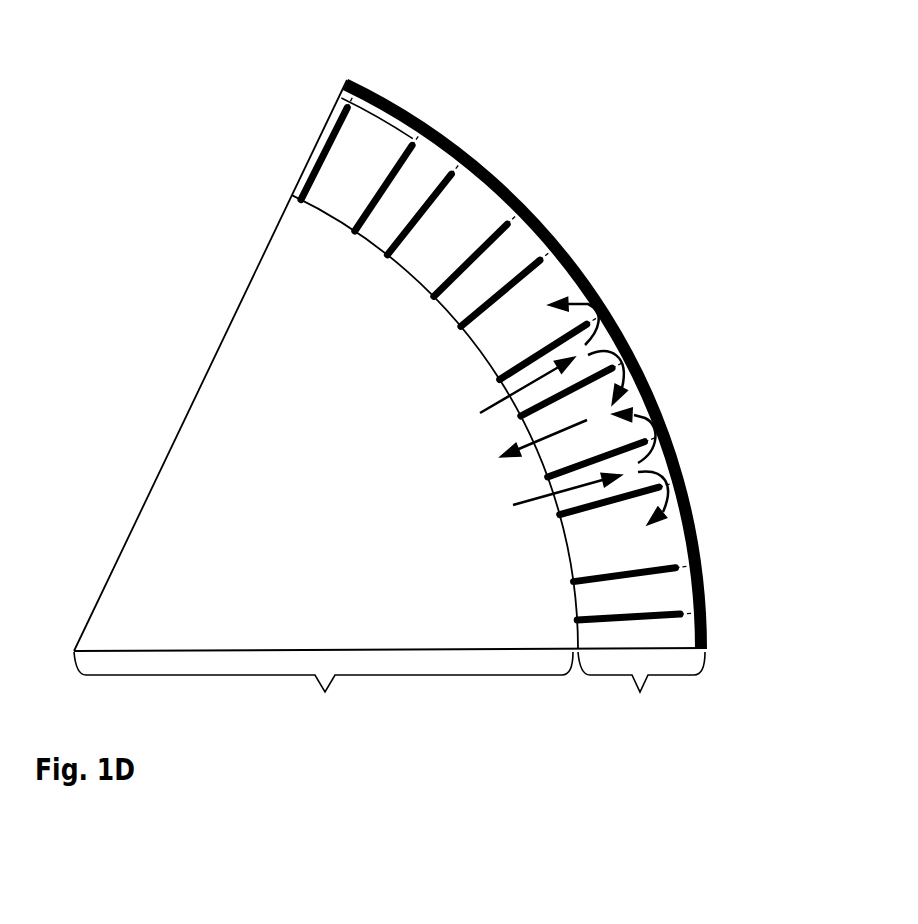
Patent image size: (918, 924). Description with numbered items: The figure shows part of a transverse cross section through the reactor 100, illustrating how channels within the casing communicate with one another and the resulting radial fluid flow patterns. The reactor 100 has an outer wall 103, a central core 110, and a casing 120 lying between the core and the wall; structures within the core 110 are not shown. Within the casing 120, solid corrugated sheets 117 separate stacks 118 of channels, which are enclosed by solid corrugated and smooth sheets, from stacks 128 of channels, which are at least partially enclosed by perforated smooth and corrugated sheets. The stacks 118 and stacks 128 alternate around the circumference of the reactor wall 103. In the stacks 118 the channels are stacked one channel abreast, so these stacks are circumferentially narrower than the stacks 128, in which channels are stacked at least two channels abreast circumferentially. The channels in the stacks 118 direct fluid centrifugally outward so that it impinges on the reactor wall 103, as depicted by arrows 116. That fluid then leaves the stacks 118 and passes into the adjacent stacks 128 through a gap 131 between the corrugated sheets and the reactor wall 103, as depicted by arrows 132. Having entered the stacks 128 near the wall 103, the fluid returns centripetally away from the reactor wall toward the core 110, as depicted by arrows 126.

The reactor 100 is at (390, 365).
The wall 103 is at (472, 152).
The core 110 is at (323, 697).
The arrows 116 is at (494, 403).
The solid corrugated sheets 117 is at (487, 253).
The stacks of channels 118 is at (424, 177).
The casing 120 is at (583, 497).
The arrows 126 is at (558, 438).
The stacks of channels 128 is at (448, 229).
The gap 131 is at (416, 136).
The arrows 132 is at (636, 363).